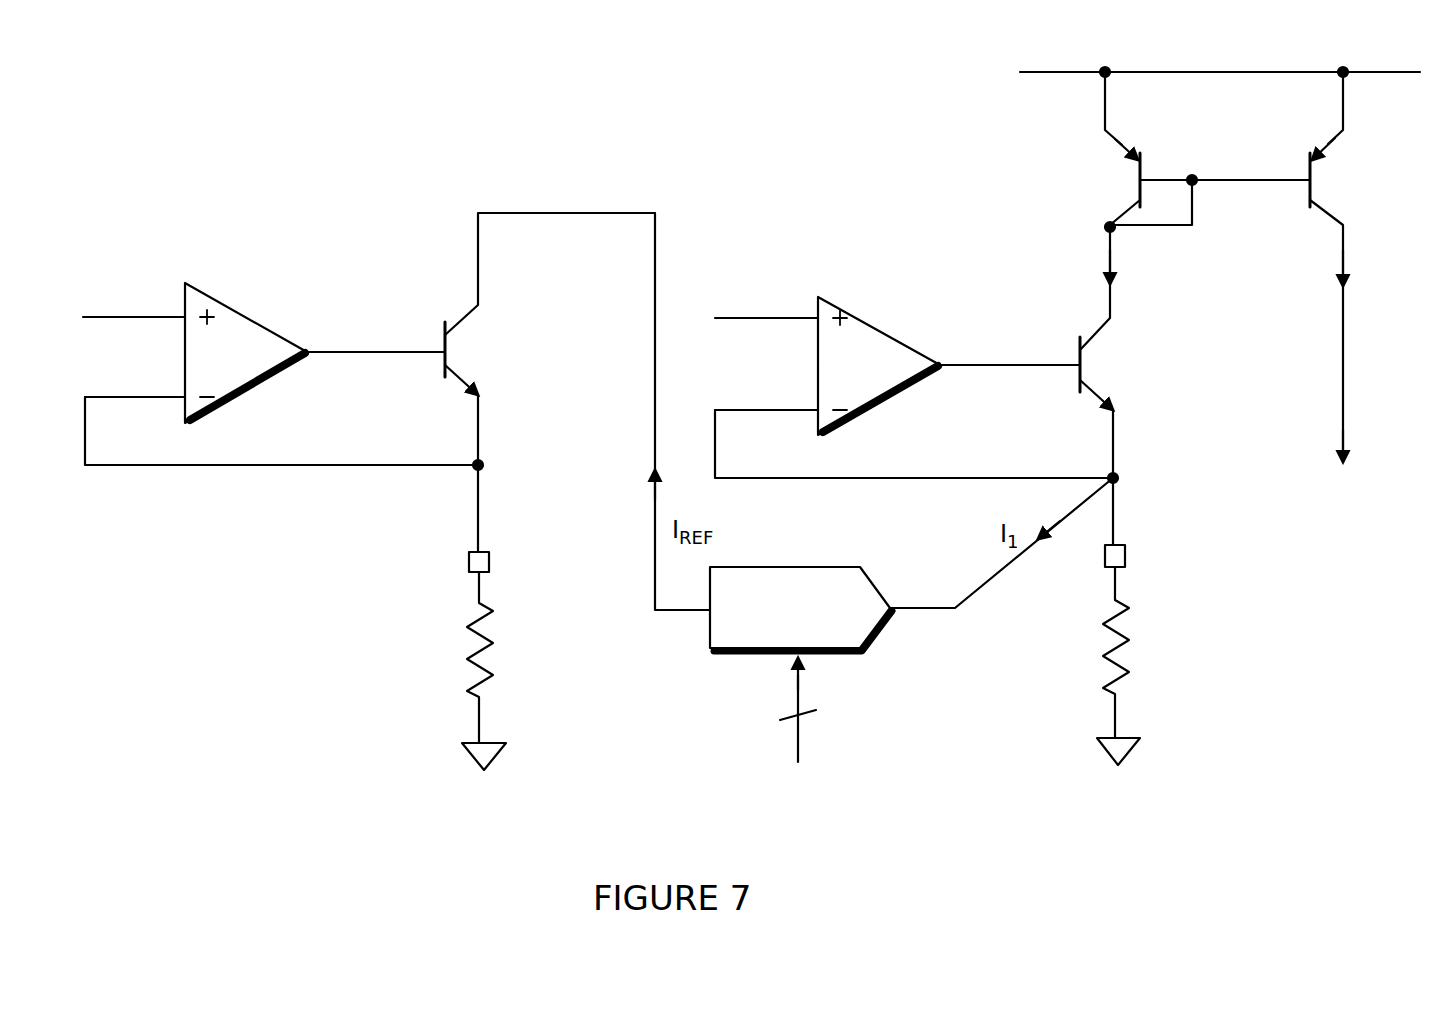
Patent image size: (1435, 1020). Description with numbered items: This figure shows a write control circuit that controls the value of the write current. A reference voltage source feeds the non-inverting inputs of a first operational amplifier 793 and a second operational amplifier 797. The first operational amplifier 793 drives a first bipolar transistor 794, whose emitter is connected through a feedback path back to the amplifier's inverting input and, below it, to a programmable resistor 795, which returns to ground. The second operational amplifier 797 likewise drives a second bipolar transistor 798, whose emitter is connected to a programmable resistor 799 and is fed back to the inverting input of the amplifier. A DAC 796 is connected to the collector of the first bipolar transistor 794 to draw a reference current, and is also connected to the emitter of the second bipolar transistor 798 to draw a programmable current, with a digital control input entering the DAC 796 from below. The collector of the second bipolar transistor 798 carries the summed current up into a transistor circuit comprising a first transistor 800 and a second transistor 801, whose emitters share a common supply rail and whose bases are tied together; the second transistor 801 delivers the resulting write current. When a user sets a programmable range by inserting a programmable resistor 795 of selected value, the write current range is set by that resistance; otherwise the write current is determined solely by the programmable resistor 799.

The first operational amplifier 793 is at (246, 322).
The first bipolar transistor 794 is at (447, 364).
The programmable resistor 795 is at (470, 630).
The DAC 796 is at (720, 632).
The second operational amplifier 797 is at (880, 322).
The second bipolar transistor 798 is at (1082, 378).
The programmable resistor 799 is at (1105, 626).
The first transistor 800 is at (1143, 165).
The second transistor 801 is at (1300, 190).